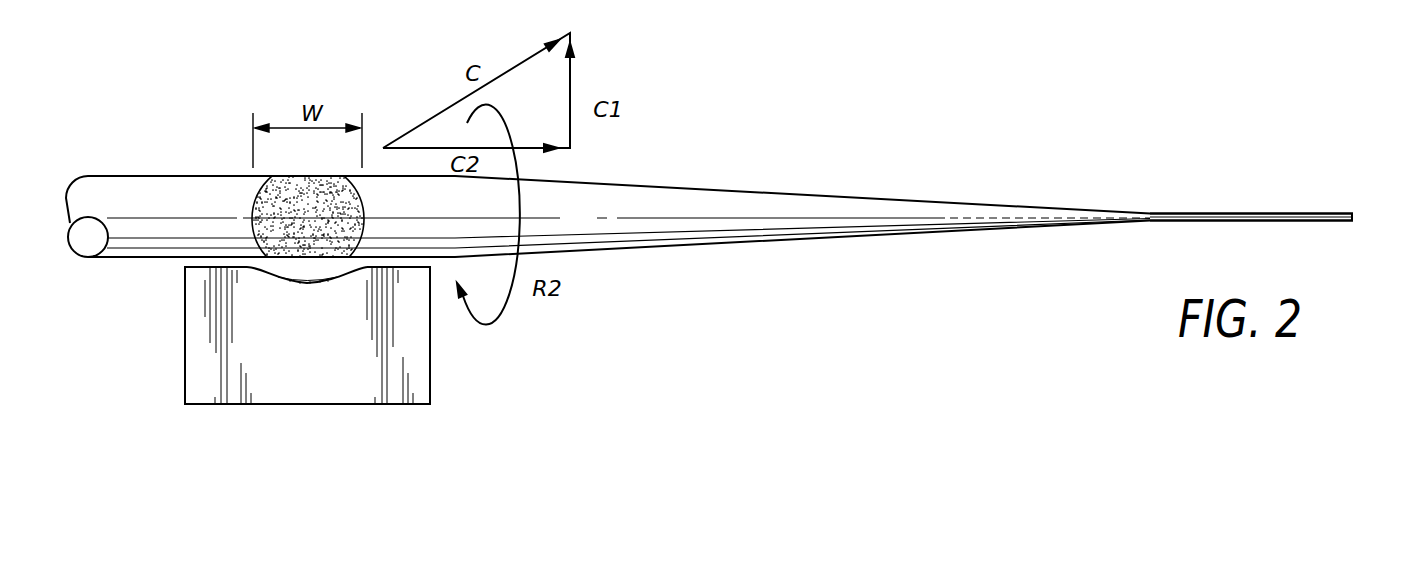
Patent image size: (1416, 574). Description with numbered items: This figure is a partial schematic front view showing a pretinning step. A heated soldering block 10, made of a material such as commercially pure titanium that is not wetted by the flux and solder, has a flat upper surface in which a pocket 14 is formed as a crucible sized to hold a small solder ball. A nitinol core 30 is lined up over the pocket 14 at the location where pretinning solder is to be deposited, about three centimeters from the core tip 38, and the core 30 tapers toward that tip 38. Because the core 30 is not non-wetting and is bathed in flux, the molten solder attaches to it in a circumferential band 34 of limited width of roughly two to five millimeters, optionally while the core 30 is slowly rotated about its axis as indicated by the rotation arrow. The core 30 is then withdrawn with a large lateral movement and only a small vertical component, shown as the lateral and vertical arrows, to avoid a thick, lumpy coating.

The soldering block 10 is at (203, 323).
The pocket 14 is at (317, 282).
The core 30 is at (808, 193).
The circumferential band 34 is at (273, 215).
The core tip 38 is at (1354, 218).